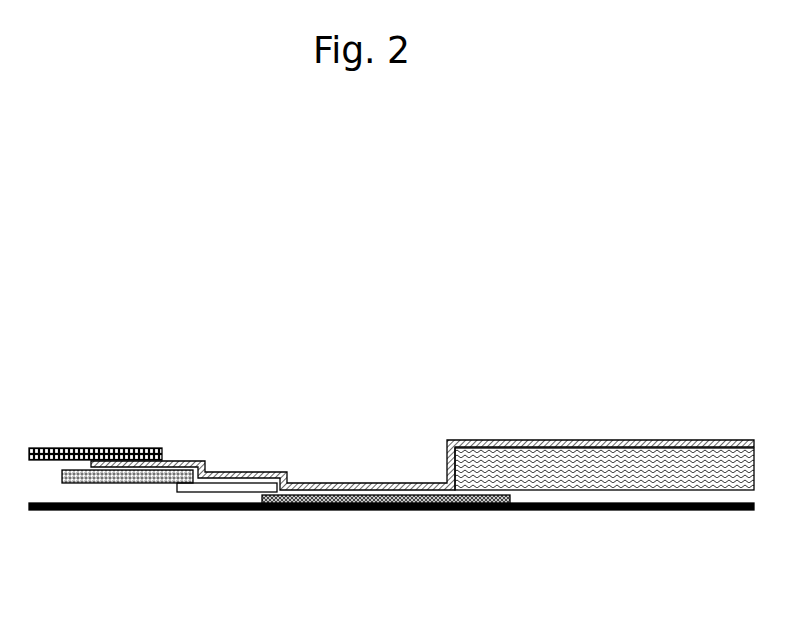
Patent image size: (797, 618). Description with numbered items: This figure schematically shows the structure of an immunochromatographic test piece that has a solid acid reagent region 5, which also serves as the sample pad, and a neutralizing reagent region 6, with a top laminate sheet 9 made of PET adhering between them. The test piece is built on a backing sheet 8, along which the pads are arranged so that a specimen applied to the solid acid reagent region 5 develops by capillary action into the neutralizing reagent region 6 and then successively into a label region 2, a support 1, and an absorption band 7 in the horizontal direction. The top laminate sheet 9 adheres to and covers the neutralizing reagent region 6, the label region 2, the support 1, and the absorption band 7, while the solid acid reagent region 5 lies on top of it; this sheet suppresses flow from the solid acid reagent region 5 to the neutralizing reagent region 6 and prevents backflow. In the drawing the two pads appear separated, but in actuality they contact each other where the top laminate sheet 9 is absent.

The support 1 is at (362, 490).
The label region 2 is at (232, 492).
The solid acid reagent region 5 is at (92, 447).
The neutralizing reagent region 6 is at (132, 483).
The absorption band 7 is at (603, 490).
The backing sheet 8 is at (717, 510).
The top laminate sheet 9 is at (533, 440).